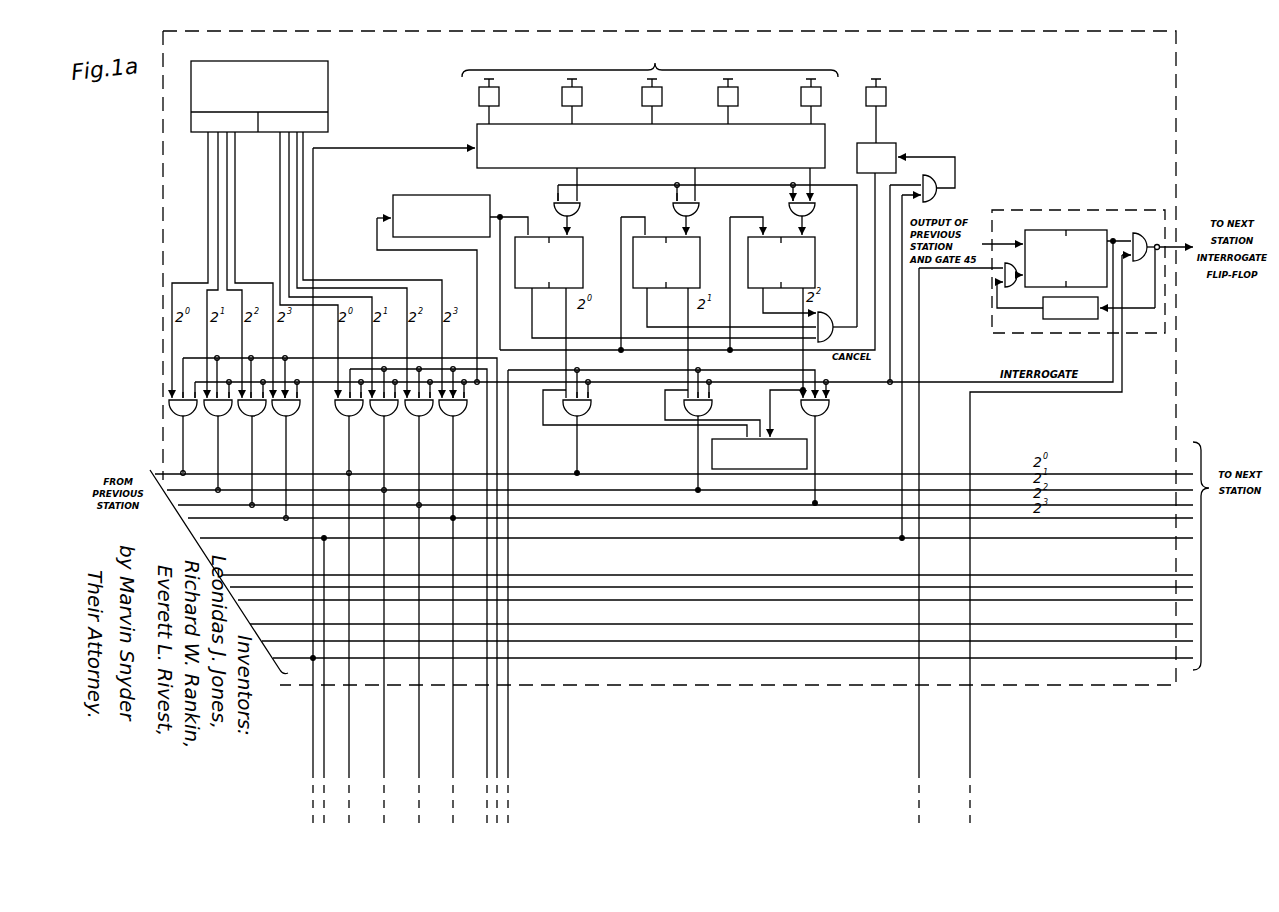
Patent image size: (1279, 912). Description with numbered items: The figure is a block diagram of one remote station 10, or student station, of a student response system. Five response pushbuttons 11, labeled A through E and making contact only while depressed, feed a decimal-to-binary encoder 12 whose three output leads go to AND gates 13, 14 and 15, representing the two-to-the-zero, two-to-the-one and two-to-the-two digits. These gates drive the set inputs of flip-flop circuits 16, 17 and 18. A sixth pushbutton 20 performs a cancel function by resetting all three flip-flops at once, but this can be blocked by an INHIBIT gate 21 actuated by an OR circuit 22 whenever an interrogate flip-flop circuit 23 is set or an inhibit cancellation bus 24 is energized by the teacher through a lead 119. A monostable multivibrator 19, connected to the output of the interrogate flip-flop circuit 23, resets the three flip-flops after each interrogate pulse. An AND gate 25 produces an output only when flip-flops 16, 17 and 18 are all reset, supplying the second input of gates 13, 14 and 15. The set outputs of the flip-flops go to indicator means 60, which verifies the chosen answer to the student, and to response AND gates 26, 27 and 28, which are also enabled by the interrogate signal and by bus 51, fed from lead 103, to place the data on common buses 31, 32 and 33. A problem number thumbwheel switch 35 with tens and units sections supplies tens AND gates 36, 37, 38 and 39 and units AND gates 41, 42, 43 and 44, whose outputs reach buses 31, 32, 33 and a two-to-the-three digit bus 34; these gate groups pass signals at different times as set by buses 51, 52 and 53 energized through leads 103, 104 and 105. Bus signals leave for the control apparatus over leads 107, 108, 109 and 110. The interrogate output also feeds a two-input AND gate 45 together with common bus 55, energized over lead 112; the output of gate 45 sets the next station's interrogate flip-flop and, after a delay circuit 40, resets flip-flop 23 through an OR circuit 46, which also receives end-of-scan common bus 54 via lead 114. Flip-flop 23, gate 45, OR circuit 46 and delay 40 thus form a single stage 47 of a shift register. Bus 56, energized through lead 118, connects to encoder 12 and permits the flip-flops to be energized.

The remote station 10 is at (1178, 118).
The response pushbuttons 11 is at (650, 83).
The decimal-to-binary encoder 12 is at (827, 130).
The AND gate 13 is at (583, 215).
The AND gate 14 is at (702, 215).
The AND gate 15 is at (818, 215).
The flip-flop circuit 16 is at (584, 263).
The flip-flop circuit 17 is at (703, 264).
The flip-flop circuit 18 is at (818, 268).
The monostable multivibrator 19 is at (438, 195).
The sixth pushbutton 20 is at (888, 98).
The INHIBIT gate 21 is at (895, 145).
The OR circuit 22 is at (938, 183).
The interrogate flip-flop circuit 23 is at (1066, 230).
The inhibit cancellation bus 24 is at (286, 540).
The AND gate 25 is at (835, 319).
The response AND gate 26 is at (592, 410).
The response AND gate 27 is at (717, 411).
The response AND gate 28 is at (832, 410).
The 2^0 digit bus 31 is at (562, 473).
The 2^1 digit bus 32 is at (590, 490).
The 2^2 digit bus 33 is at (612, 505).
The 2^3 digit bus 34 is at (612, 518).
The thumbwheel switch 35 is at (330, 88).
The tens AND gate 36 is at (194, 417).
The tens AND gate 37 is at (229, 417).
The tens AND gate 38 is at (263, 417).
The tens AND gate 39 is at (297, 417).
The delay circuit 40 is at (1044, 319).
The units AND gate 41 is at (360, 417).
The units AND gate 42 is at (395, 417).
The units AND gate 43 is at (430, 417).
The units AND gate 44 is at (464, 417).
The AND gate 45 is at (1145, 234).
The OR circuit 46 is at (1013, 289).
The single stage 47 is at (1086, 210).
The bus 51 is at (548, 575).
The bus 52 is at (600, 600).
The bus 53 is at (598, 587).
The common bus 54 is at (1008, 642).
The common bus 55 is at (1012, 626).
The bus 56 is at (998, 660).
The indicator means 60 is at (787, 437).
The lead 103 is at (515, 720).
The lead 104 is at (487, 725).
The lead 105 is at (500, 738).
The lead 107 is at (349, 735).
The lead 108 is at (384, 732).
The lead 109 is at (419, 732).
The lead 110 is at (453, 734).
The lead 112 is at (972, 722).
The lead 114 is at (917, 722).
The lead 118 is at (312, 710).
The lead 119 is at (326, 712).